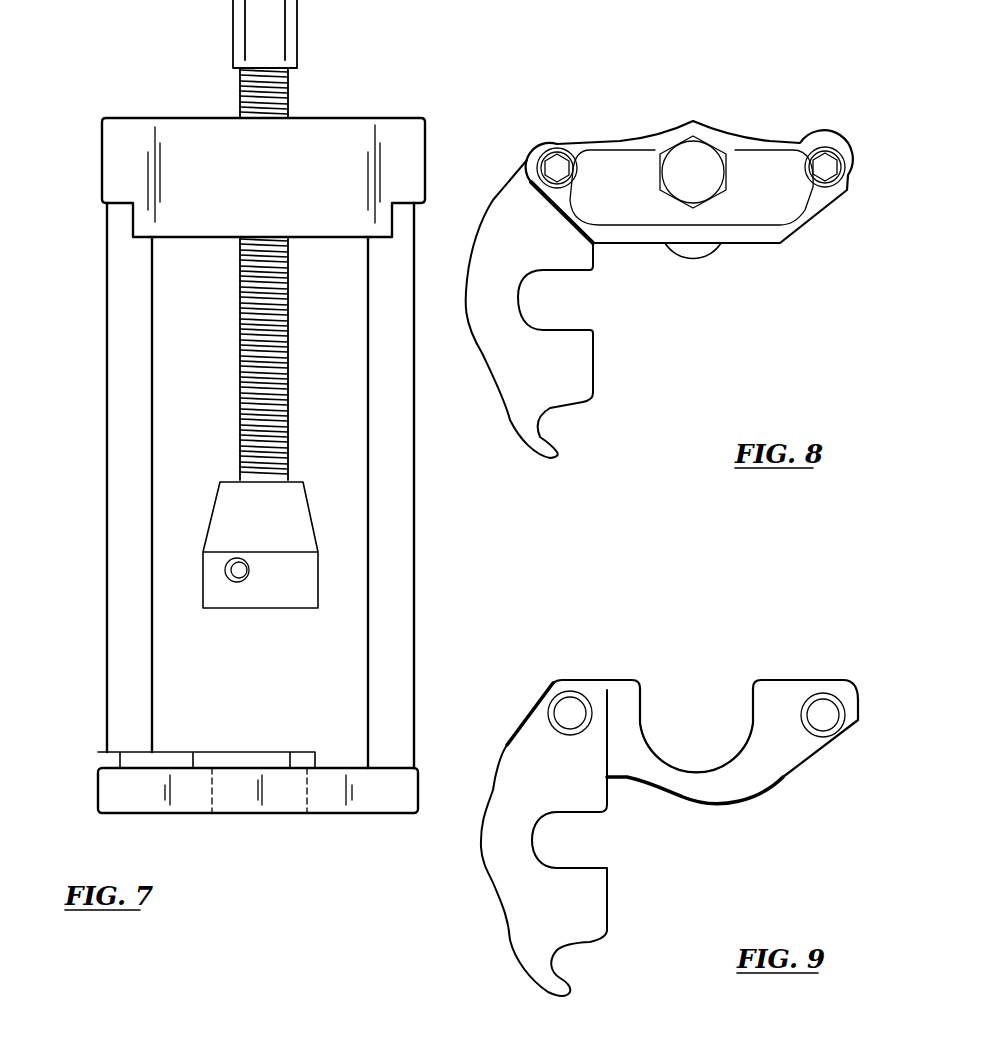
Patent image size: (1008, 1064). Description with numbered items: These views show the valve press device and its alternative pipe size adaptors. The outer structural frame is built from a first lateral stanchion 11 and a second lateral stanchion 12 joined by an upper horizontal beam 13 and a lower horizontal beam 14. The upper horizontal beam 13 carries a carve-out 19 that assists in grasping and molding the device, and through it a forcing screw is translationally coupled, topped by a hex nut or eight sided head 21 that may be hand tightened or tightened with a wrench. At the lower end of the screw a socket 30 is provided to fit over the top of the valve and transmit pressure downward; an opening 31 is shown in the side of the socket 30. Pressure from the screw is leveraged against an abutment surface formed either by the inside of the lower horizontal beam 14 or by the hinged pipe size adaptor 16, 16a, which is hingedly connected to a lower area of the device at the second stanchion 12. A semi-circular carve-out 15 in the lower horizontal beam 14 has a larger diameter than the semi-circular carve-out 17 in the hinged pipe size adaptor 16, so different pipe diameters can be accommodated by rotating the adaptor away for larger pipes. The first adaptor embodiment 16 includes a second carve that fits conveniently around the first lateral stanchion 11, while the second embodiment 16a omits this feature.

In FIG. 7, the first lateral stanchion 11 is at (405, 578).
In FIG. 7, the second lateral stanchion 12 is at (135, 668).
In FIG. 8, the upper horizontal beam 13 is at (825, 200).
In FIG. 9, the lower horizontal beam 14 is at (782, 687).
In FIG. 9, the semi-circular carve-out 15 is at (682, 742).
In FIG. 8, the hinged pipe size adaptor 16 is at (583, 380).
In FIG. 9, the hinged pipe size adaptor 16 is at (598, 918).
In FIG. 7, the pipe size adaptor 16a is at (237, 762).
In FIG. 9, the semi-circular carve-out 17 is at (562, 843).
In FIG. 8, the carve-out 19 is at (760, 170).
In FIG. 7, the hex nut or eight sided head 21 is at (275, 33).
In FIG. 8, the hex nut or eight sided head 21 is at (695, 157).
In FIG. 7, the socket 30 is at (233, 495).
In FIG. 7, the block hole 31 is at (242, 583).